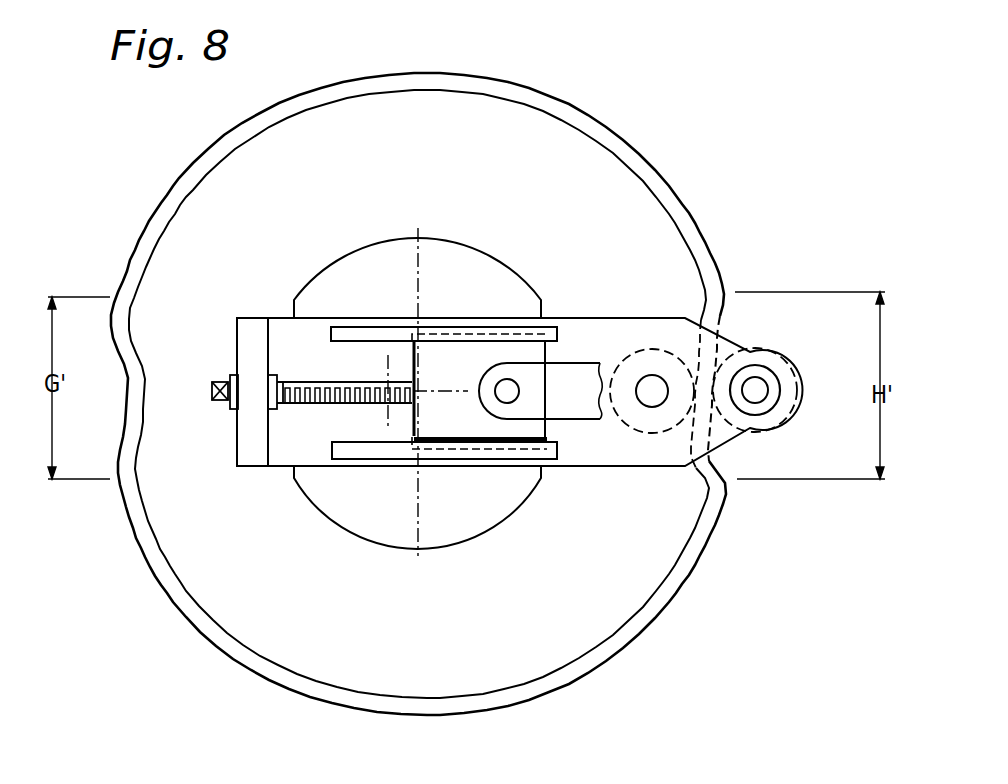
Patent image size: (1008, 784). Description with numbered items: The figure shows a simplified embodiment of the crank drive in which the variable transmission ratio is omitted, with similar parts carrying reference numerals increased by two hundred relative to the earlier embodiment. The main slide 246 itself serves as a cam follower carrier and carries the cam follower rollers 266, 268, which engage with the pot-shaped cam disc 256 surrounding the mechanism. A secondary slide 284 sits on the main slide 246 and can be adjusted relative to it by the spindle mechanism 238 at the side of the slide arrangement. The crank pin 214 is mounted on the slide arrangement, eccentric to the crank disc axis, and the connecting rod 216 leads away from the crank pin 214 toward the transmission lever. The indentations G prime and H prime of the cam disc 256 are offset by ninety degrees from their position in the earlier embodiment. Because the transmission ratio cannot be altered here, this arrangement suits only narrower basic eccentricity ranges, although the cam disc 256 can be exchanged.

The pot-shaped cam disc 256 is at (499, 174).
The secondary slide 284 is at (462, 362).
The main slide 246 is at (590, 318).
The crank pin 214 is at (498, 393).
The connecting rod 216 is at (578, 412).
The cam follower roller 266 is at (650, 418).
The cam follower roller 268 is at (787, 405).
The spindle mechanism 238 is at (222, 403).